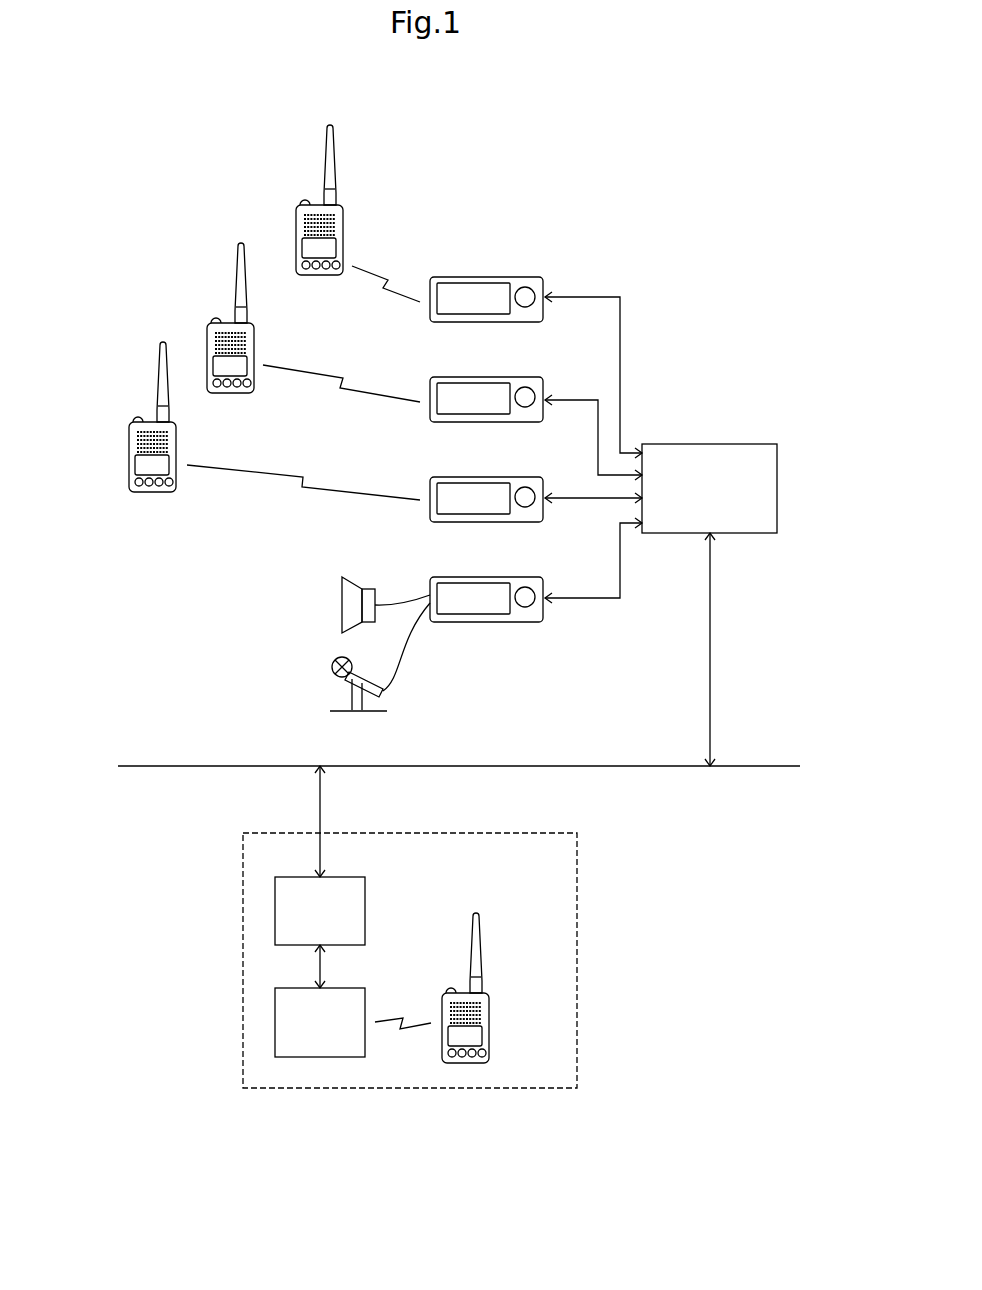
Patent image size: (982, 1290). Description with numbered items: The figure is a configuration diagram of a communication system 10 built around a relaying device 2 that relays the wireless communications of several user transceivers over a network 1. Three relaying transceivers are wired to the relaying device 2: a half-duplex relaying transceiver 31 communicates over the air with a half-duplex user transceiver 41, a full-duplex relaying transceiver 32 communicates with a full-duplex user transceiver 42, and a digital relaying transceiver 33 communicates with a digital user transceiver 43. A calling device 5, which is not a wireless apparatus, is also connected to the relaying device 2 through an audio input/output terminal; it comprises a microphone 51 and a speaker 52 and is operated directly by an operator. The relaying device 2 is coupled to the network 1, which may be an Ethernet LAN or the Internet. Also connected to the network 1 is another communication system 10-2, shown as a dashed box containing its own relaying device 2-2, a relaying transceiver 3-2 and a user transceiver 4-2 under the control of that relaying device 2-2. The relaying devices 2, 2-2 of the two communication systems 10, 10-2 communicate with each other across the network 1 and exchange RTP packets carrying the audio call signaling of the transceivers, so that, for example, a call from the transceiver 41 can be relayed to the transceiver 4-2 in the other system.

The communication system 10 is at (712, 246).
The user transceiver 41 is at (296, 211).
The user transceiver 42 is at (208, 332).
The digital user transceiver 43 is at (131, 432).
The half-duplex relaying transceiver 31 is at (545, 282).
The duplex relaying transceiver 32 is at (545, 382).
The digital relaying transceiver 33 is at (535, 480).
The calling device 5 is at (545, 582).
The speaker 52 is at (341, 590).
The microphone 51 is at (331, 668).
The relaying device 2 is at (777, 446).
The network 1 is at (510, 766).
The other communication system 10-2 is at (545, 835).
The relaying device 2-2 is at (365, 878).
The second base station radio 3-2 is at (365, 988).
The transceiver 4-2 is at (498, 987).